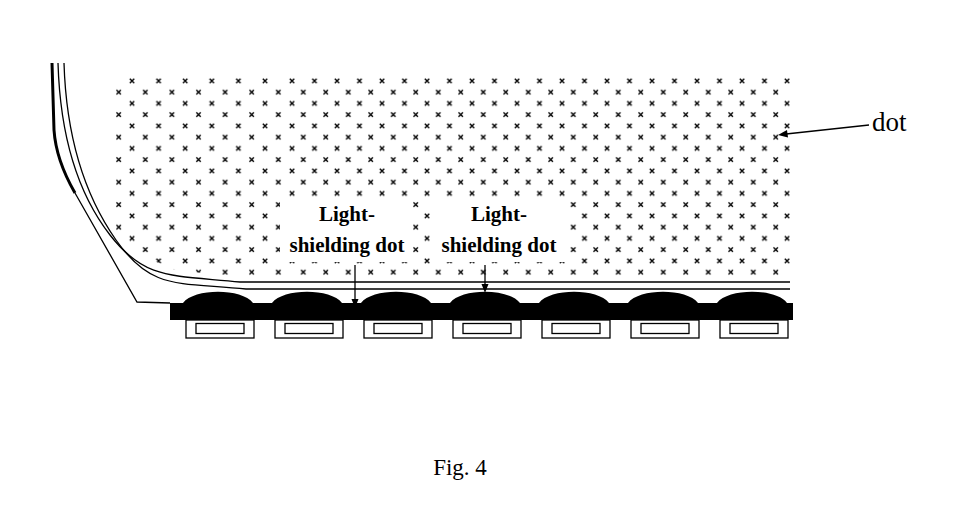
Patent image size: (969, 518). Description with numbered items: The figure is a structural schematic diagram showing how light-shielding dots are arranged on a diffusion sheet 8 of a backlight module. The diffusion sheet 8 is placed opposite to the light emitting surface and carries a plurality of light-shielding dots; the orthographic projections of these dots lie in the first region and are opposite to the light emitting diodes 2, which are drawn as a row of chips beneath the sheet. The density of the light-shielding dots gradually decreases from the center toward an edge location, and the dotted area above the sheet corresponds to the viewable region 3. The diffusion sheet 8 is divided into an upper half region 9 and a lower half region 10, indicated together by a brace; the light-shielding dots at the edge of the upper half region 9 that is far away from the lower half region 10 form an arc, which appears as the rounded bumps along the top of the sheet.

The light emitting diode 2 is at (387, 346).
The viewable region 3 is at (792, 203).
The diffusion sheet 8 is at (543, 316).
The upper half region 9 is at (793, 298).
The lower half region 10 is at (800, 321).